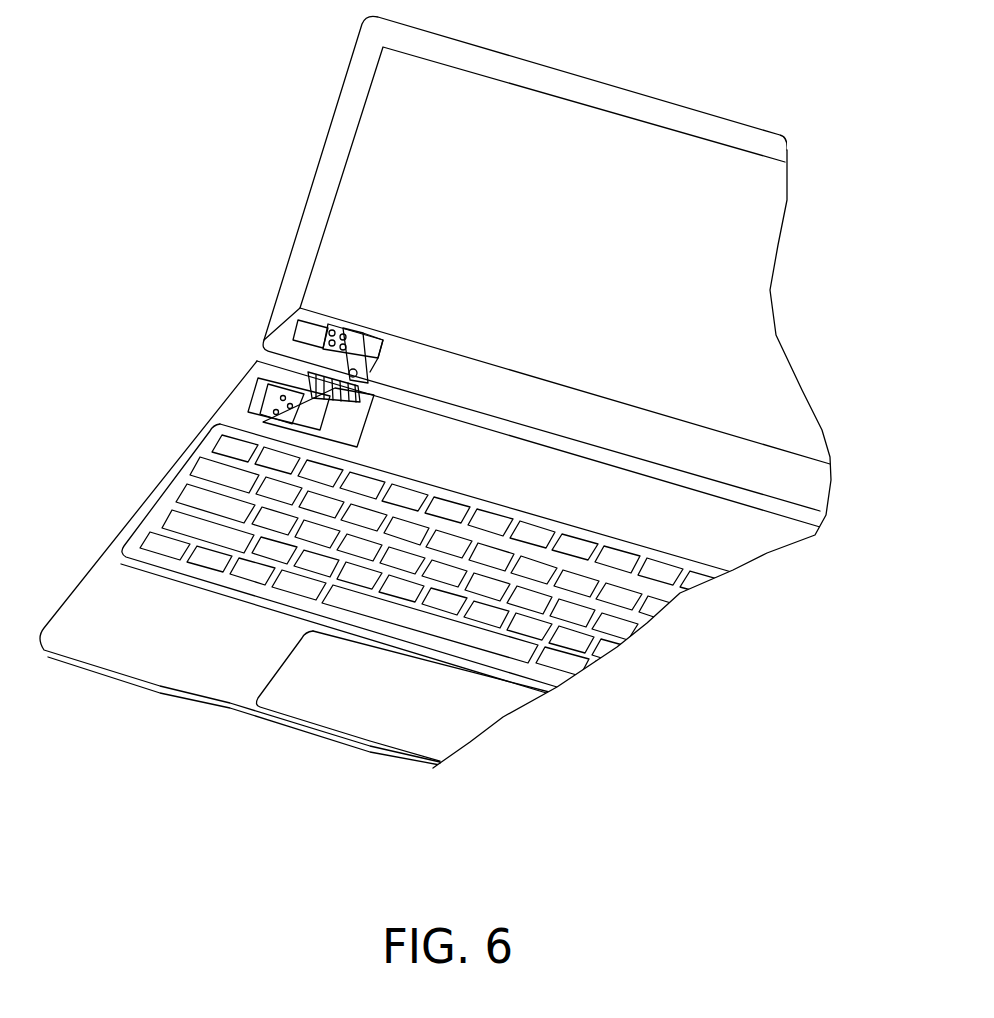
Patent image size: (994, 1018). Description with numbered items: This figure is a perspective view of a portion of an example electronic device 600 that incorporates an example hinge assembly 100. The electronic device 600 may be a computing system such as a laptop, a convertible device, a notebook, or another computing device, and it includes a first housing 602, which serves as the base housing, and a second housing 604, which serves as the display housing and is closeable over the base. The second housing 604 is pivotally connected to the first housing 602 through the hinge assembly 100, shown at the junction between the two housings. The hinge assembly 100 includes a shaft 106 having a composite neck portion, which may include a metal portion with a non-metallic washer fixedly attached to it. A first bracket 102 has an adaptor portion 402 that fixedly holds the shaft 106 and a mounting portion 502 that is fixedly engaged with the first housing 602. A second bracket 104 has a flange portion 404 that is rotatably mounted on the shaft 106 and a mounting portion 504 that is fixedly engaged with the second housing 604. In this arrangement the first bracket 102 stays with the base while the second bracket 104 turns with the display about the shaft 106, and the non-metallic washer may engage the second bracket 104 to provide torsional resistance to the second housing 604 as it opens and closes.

The hinge assembly 100 is at (297, 313).
The first bracket 102 is at (345, 428).
The second bracket 104 is at (375, 366).
The shaft 106 is at (310, 378).
The adaptor portion 402 is at (258, 386).
The flange portion 404 is at (295, 342).
The mounting portion 502 is at (262, 420).
The mounting portion 504 is at (298, 322).
The electronic device 600 is at (697, 808).
The first housing 602 is at (197, 437).
The second housing 604 is at (316, 168).